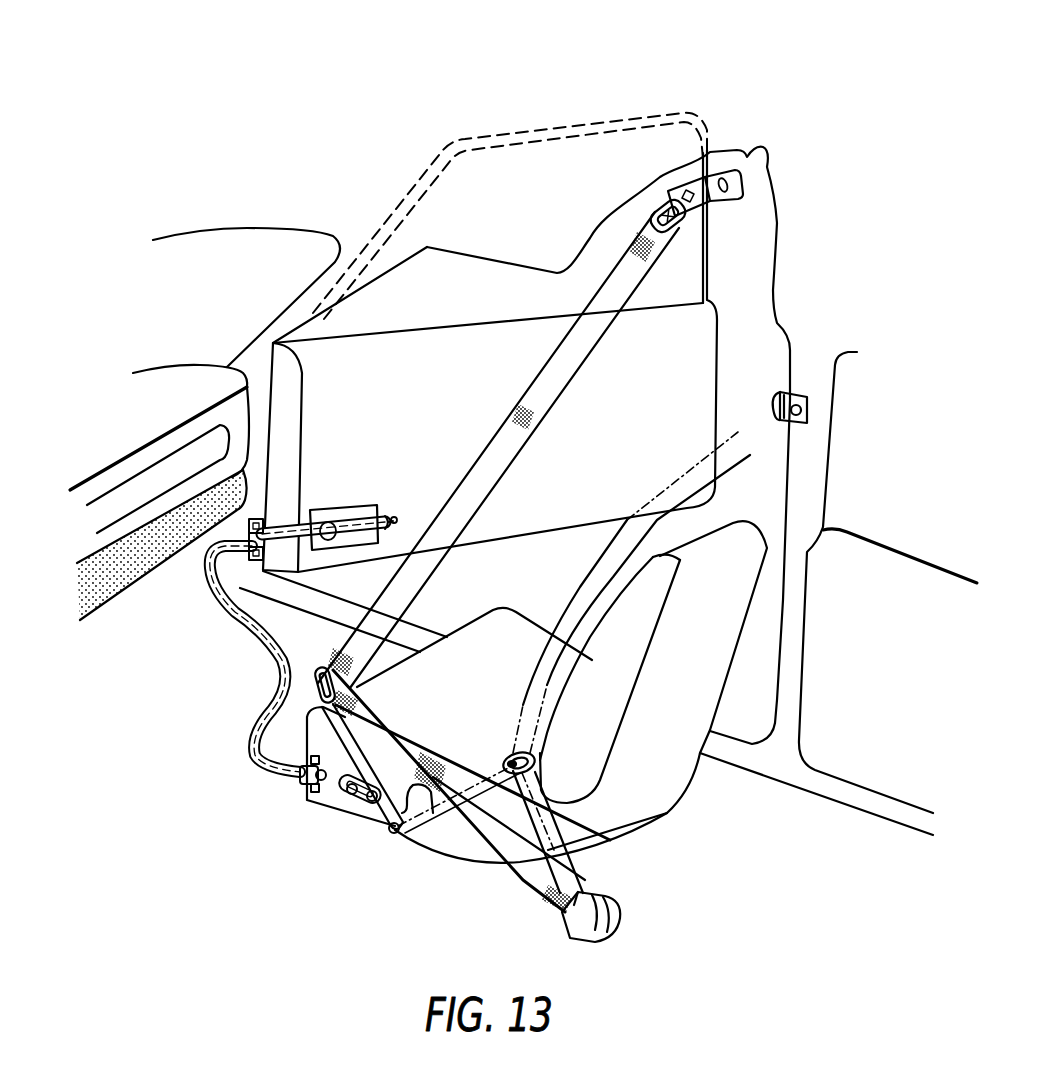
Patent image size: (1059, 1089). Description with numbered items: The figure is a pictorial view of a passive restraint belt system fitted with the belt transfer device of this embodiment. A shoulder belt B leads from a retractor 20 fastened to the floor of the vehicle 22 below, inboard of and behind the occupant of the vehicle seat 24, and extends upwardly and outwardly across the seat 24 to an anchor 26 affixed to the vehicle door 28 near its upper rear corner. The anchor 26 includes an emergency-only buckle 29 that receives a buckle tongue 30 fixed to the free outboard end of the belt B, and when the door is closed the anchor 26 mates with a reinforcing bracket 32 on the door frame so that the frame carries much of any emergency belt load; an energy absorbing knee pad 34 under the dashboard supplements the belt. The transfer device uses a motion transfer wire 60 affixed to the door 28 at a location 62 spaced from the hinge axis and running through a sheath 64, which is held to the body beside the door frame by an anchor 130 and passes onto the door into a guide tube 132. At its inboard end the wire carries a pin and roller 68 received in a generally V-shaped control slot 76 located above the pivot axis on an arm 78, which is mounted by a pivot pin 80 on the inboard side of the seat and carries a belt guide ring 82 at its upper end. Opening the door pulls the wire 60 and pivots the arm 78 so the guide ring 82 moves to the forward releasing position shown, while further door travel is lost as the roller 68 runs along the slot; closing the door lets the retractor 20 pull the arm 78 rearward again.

The retractor 20 is at (617, 910).
The vehicle 22 is at (893, 696).
The vehicle seat 24 is at (683, 701).
The anchor 26 is at (736, 172).
The vehicle door 28 is at (605, 491).
The buckle 29 is at (685, 183).
The buckle tongue 30 is at (660, 196).
The reinforcing bracket 32 is at (797, 397).
The energy absorbing knee pad 34 is at (107, 605).
The motion transfer wire 60 is at (334, 778).
The location 62 is at (397, 518).
The sheath 64 is at (262, 643).
The pin and roller 68 is at (375, 801).
The control slot 76 is at (351, 795).
The arm 78 is at (343, 730).
The pivot pin 80 is at (394, 834).
The belt guide ring 82 is at (320, 670).
The anchor 130 is at (263, 520).
The guide tube 132 is at (351, 510).
The shoulder belt B is at (598, 370).